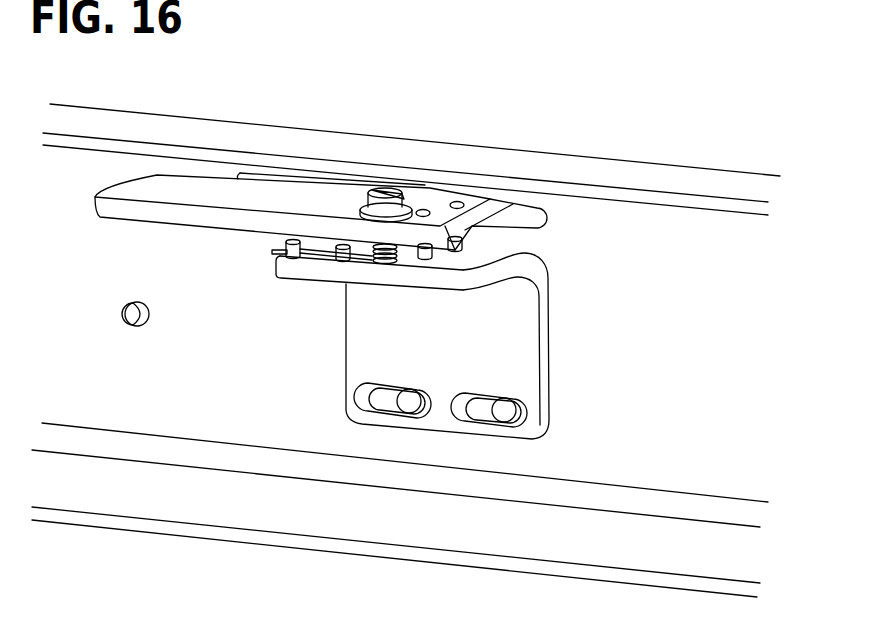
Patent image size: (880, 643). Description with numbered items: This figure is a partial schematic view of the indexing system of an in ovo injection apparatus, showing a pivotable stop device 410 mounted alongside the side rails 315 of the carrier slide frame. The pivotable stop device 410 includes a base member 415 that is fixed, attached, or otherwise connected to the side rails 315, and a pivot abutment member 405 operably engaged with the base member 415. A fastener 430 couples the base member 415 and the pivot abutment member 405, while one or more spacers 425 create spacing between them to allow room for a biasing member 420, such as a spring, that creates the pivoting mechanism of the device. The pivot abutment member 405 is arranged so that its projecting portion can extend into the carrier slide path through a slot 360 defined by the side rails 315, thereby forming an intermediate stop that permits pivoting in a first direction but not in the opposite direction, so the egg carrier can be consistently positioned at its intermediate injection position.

The side rail 315 is at (670, 177).
The pivot abutment member 405 is at (210, 190).
The fastener 430 is at (402, 198).
The slot 360 is at (522, 213).
The spacer 425 is at (275, 262).
The biasing member 420 is at (388, 254).
The base member 415 is at (515, 347).
The pivotable stop device 410 is at (227, 302).